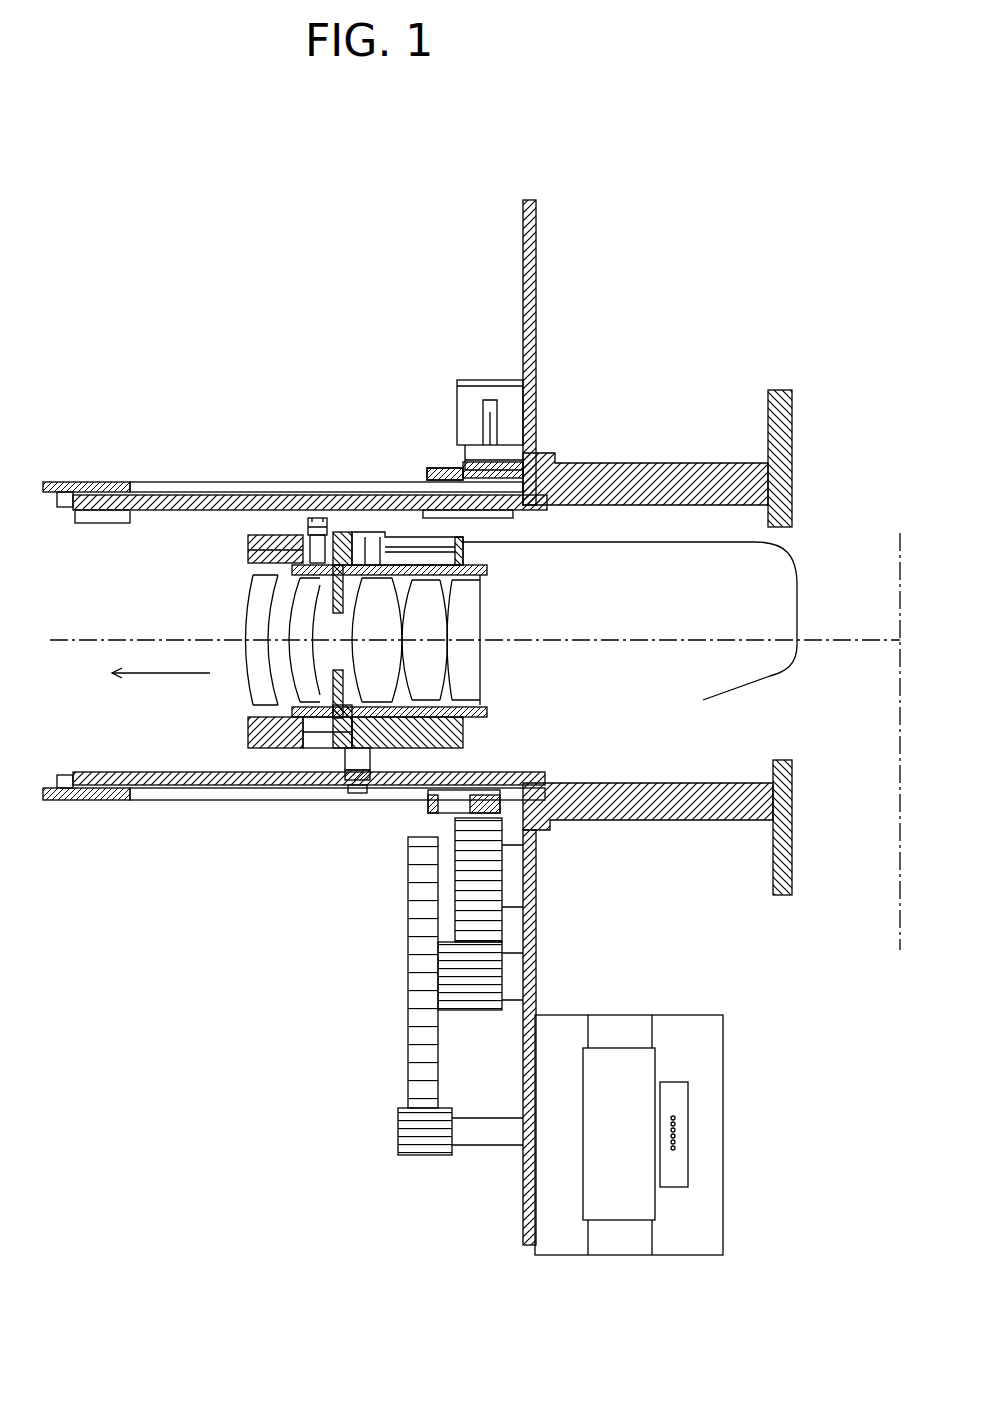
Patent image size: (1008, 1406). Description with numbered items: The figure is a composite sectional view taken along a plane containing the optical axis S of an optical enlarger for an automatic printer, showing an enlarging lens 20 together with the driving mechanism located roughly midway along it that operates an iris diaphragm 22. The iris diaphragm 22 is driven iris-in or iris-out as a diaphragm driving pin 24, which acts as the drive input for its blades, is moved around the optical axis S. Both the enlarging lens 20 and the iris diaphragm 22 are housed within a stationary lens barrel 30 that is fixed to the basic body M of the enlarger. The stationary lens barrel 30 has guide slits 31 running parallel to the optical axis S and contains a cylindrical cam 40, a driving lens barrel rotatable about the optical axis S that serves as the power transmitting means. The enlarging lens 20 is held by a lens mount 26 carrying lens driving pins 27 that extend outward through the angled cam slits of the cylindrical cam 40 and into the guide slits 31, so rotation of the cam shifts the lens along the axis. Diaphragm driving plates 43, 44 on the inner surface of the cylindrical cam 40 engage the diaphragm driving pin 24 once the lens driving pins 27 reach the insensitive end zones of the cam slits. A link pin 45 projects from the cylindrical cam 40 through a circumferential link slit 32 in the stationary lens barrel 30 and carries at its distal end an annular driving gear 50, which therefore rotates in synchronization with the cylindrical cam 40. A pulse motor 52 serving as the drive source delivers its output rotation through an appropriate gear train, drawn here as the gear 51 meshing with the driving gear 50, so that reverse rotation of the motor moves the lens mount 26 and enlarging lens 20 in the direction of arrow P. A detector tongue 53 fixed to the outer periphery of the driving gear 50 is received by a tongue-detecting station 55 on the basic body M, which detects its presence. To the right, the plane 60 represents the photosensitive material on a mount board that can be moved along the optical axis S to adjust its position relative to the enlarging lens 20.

The enlarging lens 20 is at (232, 603).
The iris diaphragm 22 is at (307, 748).
The diaphragm driving pin 24 is at (318, 520).
The lens mount 26 is at (467, 718).
The lens driving pins 27 is at (357, 762).
The stationary lens barrel 30 is at (82, 492).
The guide slits 31 is at (225, 488).
The link slit 32 is at (445, 793).
The cylindrical cam 40 is at (157, 502).
The diaphragm driving plate 43 is at (95, 523).
The diaphragm driving plate 44 is at (500, 520).
The link pin 45 is at (465, 795).
The driving gear 50 is at (532, 832).
The gear 51 is at (417, 928).
The pulse motor 52 is at (565, 1190).
The detector tongue 53 is at (490, 432).
The tongue-detecting station 55 is at (462, 415).
The plane of photosensitive material 60 is at (900, 583).
The basic body M is at (790, 420).
The optical axis S is at (127, 640).
The arrow P is at (139, 675).